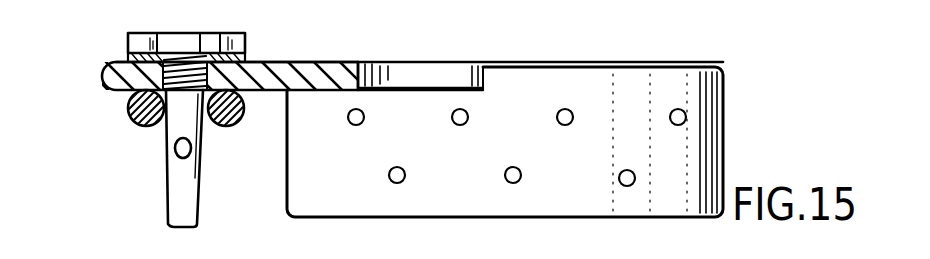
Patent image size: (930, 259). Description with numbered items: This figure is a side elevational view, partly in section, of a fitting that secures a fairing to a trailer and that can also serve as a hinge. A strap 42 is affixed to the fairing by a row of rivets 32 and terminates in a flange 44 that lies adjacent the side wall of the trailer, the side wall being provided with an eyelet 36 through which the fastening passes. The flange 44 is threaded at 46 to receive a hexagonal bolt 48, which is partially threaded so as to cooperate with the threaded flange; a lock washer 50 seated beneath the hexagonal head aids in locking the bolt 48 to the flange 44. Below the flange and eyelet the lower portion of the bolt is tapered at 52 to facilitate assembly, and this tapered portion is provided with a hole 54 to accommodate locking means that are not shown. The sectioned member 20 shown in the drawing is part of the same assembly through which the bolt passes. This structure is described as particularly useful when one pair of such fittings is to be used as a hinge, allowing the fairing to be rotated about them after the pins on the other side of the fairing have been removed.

The mounting plate 20 is at (300, 64).
The rivets 32 is at (467, 110).
The eyelet 36 is at (139, 113).
The strap 42 is at (630, 88).
The flange 44 is at (104, 78).
The threaded portion of flange 46 is at (186, 28).
The hexagonal bolt 48 is at (224, 33).
The lock washer 50 is at (127, 57).
The tapered lower portion of bolt 52 is at (163, 135).
The hole 54 is at (177, 155).